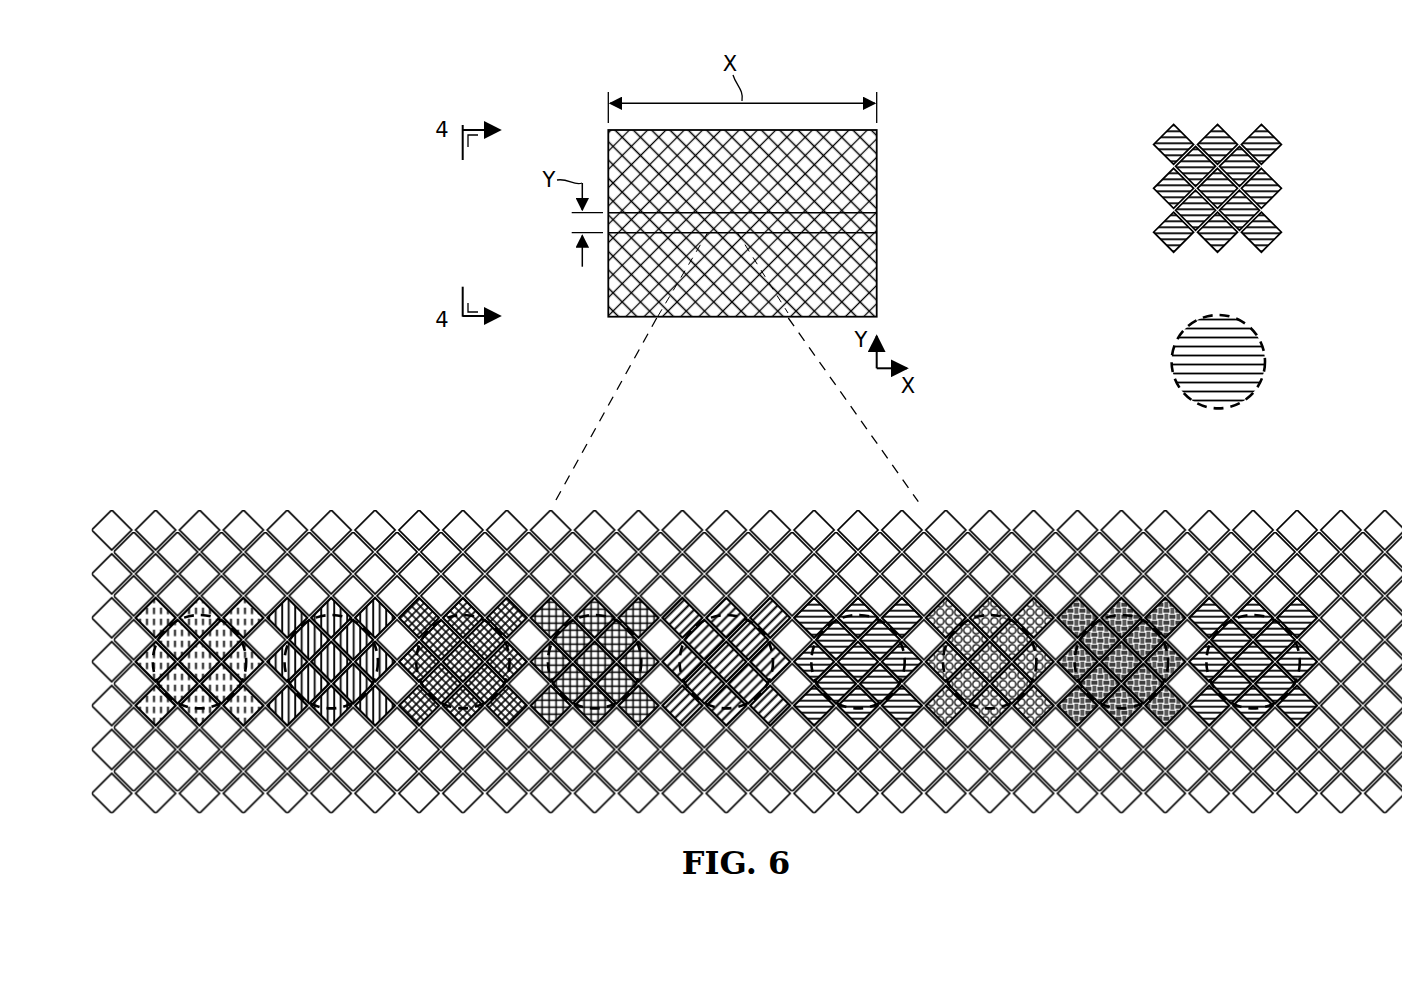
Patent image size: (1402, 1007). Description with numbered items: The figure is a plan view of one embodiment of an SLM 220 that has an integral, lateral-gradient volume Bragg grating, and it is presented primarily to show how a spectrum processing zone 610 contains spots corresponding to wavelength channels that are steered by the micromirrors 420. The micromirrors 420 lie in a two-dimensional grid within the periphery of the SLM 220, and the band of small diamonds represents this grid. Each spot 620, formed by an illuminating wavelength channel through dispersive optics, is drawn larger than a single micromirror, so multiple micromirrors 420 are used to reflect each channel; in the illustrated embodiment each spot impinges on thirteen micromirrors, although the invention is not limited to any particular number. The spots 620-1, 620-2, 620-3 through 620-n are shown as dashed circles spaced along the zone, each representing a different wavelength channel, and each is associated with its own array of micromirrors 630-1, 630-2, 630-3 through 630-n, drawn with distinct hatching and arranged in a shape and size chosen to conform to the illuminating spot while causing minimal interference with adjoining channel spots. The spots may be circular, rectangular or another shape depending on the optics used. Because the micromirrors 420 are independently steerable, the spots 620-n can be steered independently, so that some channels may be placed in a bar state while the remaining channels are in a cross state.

The SLM 220 is at (1013, 118).
The micromirrors 420 is at (712, 510).
The spectrum processing zone 610 is at (877, 222).
The spot 620 is at (980, 604).
The first spot 620-1 is at (193, 710).
The second spot 620-2 is at (324, 710).
The third spot 620-3 is at (456, 710).
The n-th spot 620-n is at (1247, 710).
The first array of micromirrors 630-1 is at (186, 604).
The second array of micromirrors 630-2 is at (320, 604).
The third array of micromirrors 630-3 is at (452, 604).
The n-th array of micromirrors 630-n is at (1236, 604).